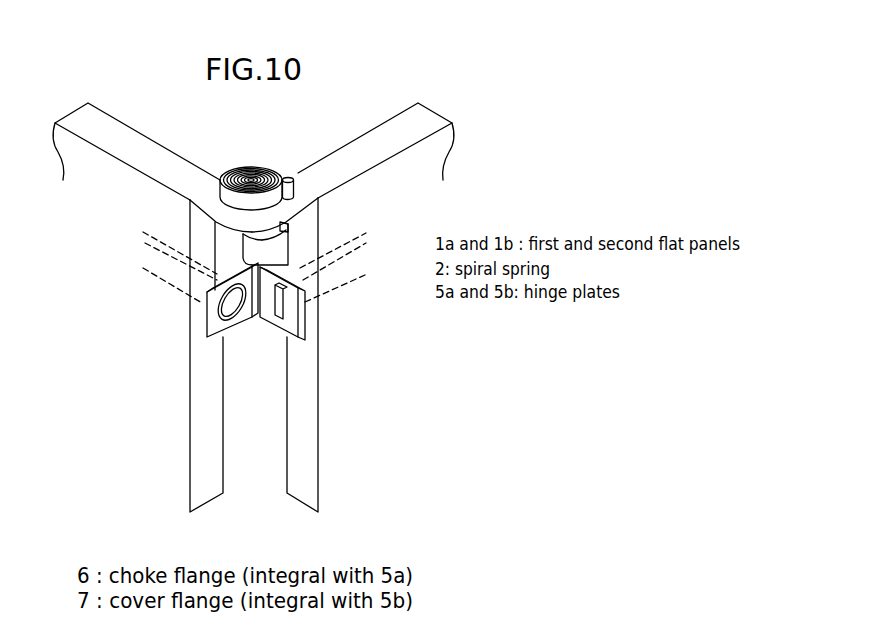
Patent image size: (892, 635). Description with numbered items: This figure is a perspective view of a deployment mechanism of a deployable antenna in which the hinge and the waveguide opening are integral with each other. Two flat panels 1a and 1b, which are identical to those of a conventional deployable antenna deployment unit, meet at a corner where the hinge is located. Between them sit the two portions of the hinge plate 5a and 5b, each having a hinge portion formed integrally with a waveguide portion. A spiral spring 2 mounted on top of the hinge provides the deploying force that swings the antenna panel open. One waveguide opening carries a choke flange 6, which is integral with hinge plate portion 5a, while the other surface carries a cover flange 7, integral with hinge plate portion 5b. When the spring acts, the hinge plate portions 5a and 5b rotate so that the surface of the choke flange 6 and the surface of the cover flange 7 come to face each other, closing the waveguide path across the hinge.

The flat panel 1a is at (124, 482).
The flat panel 1b is at (382, 482).
The spiral spring 2 is at (251, 166).
The hinge plate 5a is at (207, 200).
The hinge plate 5b is at (298, 200).
The choke flange 6 is at (210, 330).
The cover flange 7 is at (307, 330).